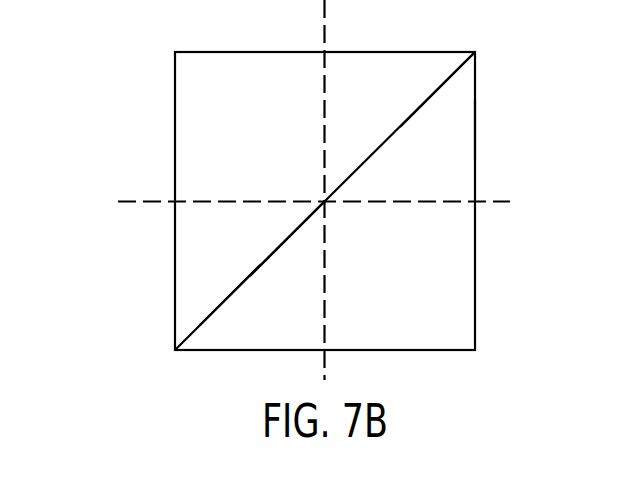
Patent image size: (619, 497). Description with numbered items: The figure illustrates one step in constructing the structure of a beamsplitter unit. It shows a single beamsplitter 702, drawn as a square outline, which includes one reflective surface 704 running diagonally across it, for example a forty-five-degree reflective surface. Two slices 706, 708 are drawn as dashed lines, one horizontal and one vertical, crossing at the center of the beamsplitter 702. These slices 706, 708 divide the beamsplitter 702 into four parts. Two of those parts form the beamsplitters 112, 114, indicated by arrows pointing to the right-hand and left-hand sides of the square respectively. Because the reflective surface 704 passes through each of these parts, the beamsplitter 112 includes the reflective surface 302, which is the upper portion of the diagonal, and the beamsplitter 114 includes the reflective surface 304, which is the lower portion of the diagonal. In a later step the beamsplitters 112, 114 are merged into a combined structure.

The beamsplitter 112 is at (494, 155).
The beamsplitter 114 is at (149, 281).
The reflective surface 302 is at (430, 94).
The reflective surface 304 is at (282, 243).
The beamsplitter 702 is at (476, 132).
The reflective surface 704 is at (247, 282).
The slice 706 is at (158, 201).
The slice 708 is at (324, 36).